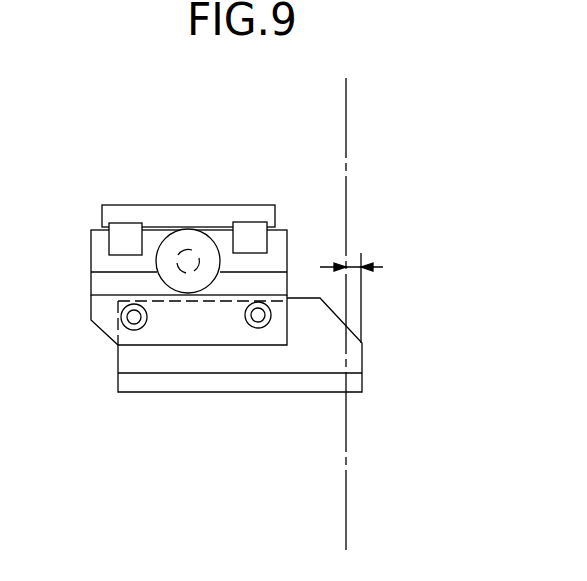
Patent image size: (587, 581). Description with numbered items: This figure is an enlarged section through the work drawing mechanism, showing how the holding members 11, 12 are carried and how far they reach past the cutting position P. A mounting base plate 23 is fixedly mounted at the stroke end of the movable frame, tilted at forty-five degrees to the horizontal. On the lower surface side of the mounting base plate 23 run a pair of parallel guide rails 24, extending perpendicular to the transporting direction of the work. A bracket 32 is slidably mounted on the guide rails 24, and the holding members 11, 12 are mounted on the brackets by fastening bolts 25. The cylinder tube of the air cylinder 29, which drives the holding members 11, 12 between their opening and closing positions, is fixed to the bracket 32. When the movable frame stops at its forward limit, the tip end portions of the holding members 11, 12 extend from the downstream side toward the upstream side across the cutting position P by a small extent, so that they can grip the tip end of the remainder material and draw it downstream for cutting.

The mounting base plate 23 is at (202, 213).
The guide rails 24 is at (124, 240).
The air cylinder 29 is at (184, 240).
The bracket 32 is at (198, 330).
The fastening bolts 25 is at (126, 328).
The holding member 12 is at (240, 349).
The holding member 11 is at (300, 350).
The cutting position P is at (346, 145).